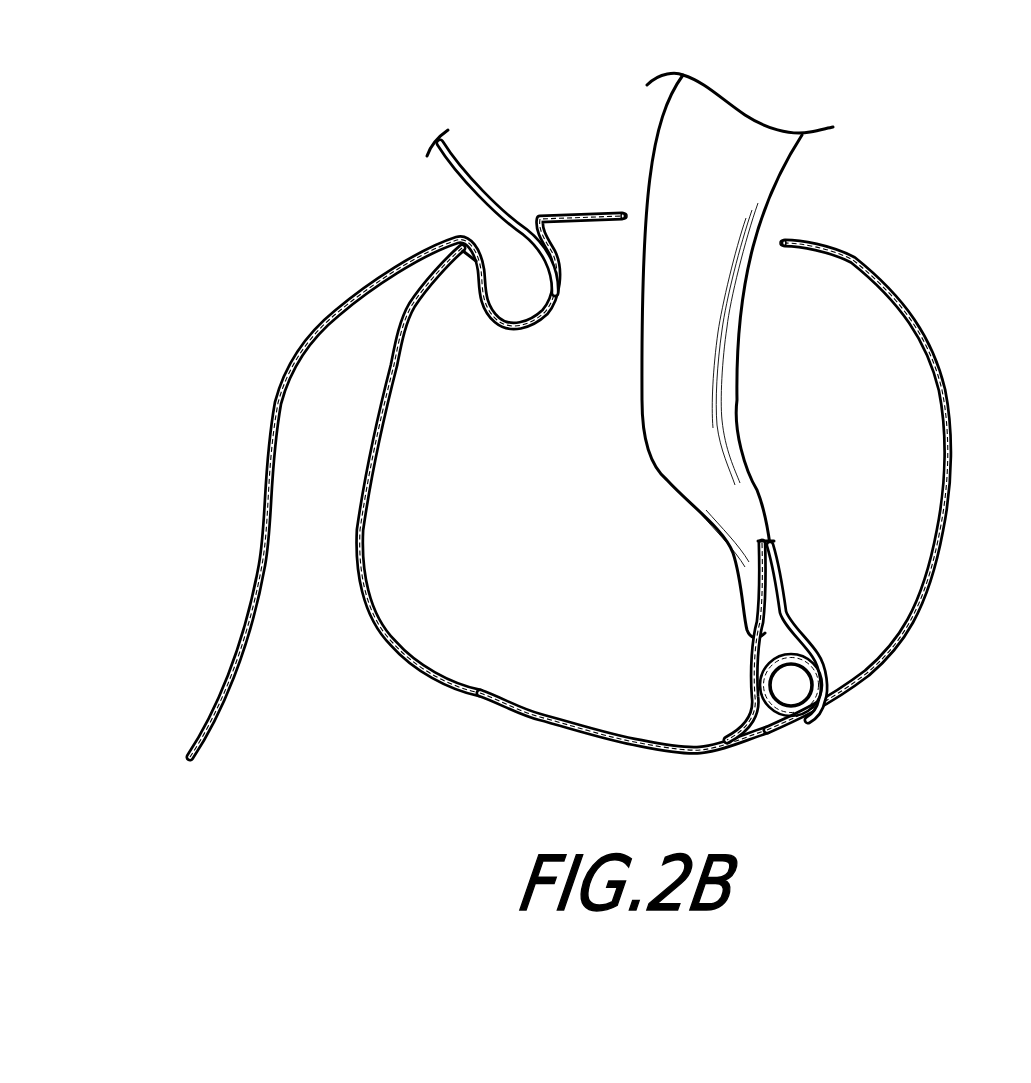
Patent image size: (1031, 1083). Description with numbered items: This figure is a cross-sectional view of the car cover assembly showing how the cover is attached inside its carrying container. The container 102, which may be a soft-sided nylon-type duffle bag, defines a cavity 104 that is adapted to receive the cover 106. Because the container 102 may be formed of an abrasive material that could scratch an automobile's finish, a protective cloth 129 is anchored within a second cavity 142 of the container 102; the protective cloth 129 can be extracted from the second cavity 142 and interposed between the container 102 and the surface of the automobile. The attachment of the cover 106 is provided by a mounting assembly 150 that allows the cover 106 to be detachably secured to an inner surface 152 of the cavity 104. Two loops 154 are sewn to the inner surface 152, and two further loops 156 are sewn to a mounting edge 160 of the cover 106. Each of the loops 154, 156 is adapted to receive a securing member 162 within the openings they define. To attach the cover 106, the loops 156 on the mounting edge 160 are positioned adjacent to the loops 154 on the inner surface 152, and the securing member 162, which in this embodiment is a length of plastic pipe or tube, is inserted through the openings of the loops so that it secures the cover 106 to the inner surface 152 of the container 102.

The container 102 is at (363, 570).
The cavity 104 is at (557, 572).
The cover 106 is at (748, 175).
The protective cloth 129 is at (273, 424).
The second cavity 142 is at (516, 282).
The mounting assembly 150 is at (755, 605).
The inner surface 152 is at (593, 723).
The loops 154 is at (757, 723).
The loops 156 is at (812, 644).
The mounting edge 160 is at (748, 543).
The securing member 162 is at (835, 713).